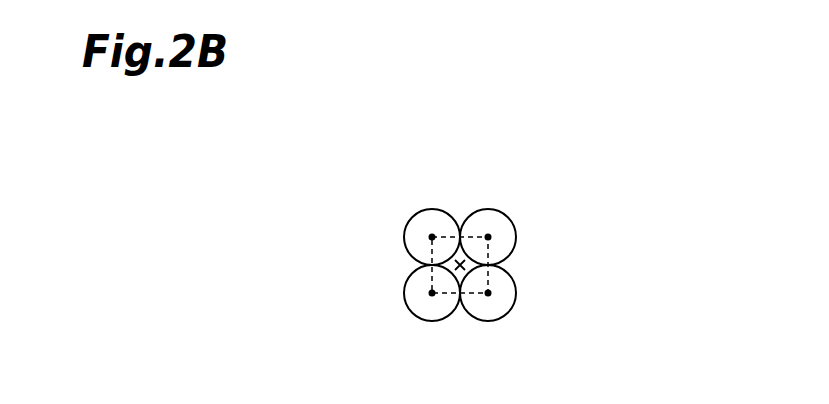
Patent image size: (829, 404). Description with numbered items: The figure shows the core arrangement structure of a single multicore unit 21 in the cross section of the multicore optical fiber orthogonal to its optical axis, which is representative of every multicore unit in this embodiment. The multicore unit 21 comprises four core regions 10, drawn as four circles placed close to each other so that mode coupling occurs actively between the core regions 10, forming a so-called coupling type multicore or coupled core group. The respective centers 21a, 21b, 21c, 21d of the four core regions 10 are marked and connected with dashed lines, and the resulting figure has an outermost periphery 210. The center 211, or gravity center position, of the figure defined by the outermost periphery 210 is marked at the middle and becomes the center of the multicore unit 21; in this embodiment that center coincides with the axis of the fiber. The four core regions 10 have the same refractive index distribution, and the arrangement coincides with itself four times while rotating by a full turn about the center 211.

The core region 10 is at (485, 218).
The multicore unit 21 is at (532, 238).
The center of core region 21a is at (432, 237).
The center of core region 21b is at (488, 237).
The center of core region 21c is at (432, 293).
The center of core region 21d is at (488, 293).
The outermost periphery 210 is at (490, 257).
The center 211 is at (440, 267).